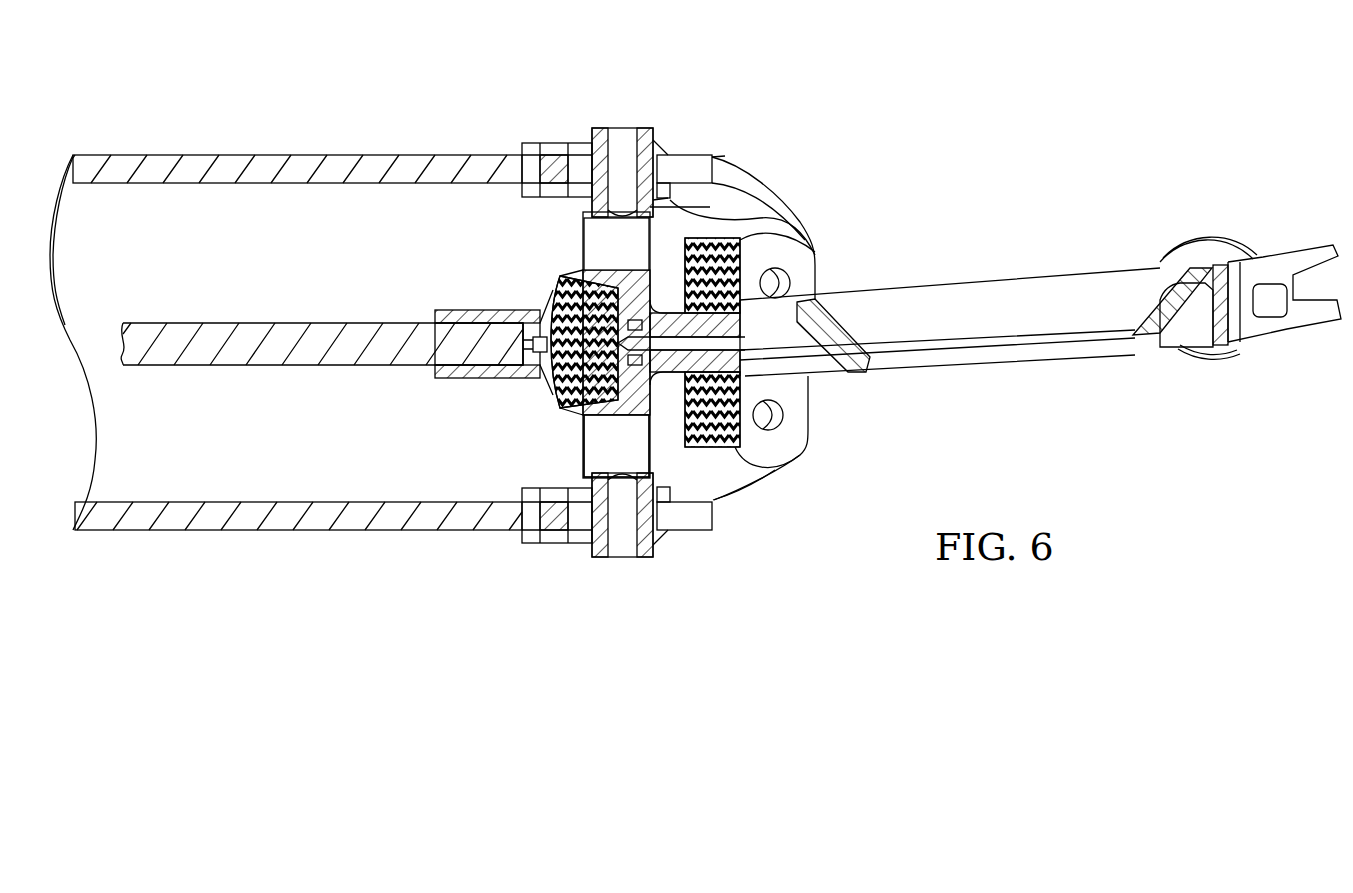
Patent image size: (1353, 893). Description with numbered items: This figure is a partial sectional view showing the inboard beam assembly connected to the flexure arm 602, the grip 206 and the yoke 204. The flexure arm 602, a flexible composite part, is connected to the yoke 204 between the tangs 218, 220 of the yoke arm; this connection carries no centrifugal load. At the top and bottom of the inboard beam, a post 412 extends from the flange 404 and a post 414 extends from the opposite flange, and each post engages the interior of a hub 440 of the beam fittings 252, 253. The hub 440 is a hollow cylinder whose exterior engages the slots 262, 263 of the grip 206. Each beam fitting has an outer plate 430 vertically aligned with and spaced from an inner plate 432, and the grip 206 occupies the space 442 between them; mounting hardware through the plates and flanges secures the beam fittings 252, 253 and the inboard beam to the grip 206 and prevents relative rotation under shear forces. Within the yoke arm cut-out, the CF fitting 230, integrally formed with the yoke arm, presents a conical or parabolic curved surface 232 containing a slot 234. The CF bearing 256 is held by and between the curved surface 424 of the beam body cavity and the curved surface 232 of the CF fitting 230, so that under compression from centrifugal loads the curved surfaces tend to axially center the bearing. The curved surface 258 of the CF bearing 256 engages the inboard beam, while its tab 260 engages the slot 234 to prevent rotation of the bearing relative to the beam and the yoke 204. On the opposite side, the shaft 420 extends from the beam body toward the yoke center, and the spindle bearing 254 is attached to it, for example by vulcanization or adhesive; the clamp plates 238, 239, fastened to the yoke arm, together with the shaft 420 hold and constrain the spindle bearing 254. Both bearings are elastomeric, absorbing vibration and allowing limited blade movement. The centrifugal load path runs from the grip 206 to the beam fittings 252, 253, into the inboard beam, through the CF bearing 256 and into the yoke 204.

The yoke 204 is at (960, 290).
The grip 206 is at (247, 155).
The tang 218 is at (460, 310).
The tang 220 is at (440, 378).
The CF fitting 230 is at (548, 395).
The curved surface 232 is at (558, 290).
The slot 234 is at (520, 345).
The clamp plate 238 is at (790, 255).
The clamp plate 239 is at (805, 450).
The beam fitting 252 is at (667, 140).
The beam fitting 253 is at (660, 545).
The spindle bearing 254 is at (790, 285).
The CF bearing 256 is at (585, 415).
The curved surface 258 is at (616, 345).
The tab 260 is at (540, 337).
The slot 262 is at (700, 180).
The slot 263 is at (735, 520).
The flange 404 is at (760, 212).
The post 412 is at (600, 128).
The post 414 is at (600, 560).
The shaft 420 is at (790, 380).
The curved surface 424 is at (616, 446).
The outer plate 430 is at (712, 160).
The inner plate 432 is at (720, 198).
The hub 440 is at (655, 158).
The space 442 is at (565, 150).
The flexure arm 602 is at (295, 366).